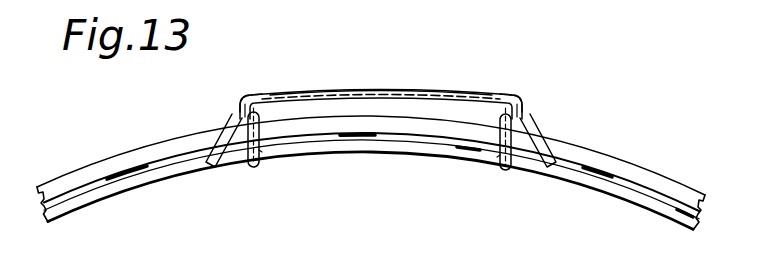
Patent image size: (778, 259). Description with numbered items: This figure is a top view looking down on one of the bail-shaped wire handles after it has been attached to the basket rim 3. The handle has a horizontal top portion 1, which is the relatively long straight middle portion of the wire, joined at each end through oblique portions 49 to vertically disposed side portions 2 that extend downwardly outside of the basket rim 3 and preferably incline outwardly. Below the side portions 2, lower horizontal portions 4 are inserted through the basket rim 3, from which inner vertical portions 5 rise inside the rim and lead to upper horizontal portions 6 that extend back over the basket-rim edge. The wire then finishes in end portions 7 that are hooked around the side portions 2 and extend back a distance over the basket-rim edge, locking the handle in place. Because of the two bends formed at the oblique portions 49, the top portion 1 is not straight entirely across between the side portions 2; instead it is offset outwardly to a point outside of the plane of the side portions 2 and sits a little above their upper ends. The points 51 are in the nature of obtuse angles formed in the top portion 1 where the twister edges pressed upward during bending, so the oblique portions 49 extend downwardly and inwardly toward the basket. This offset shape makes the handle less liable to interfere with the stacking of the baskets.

The horizontal top portion 1 is at (372, 91).
The side portions 2 is at (245, 105).
The basket rim 3 is at (635, 174).
The lower horizontal portions 4 is at (240, 112).
The inner vertical portions 5 is at (252, 170).
The upper horizontal portions 6 is at (261, 156).
The end portions 7 is at (213, 145).
The oblique portions 49 is at (246, 101).
The points 51 is at (278, 94).